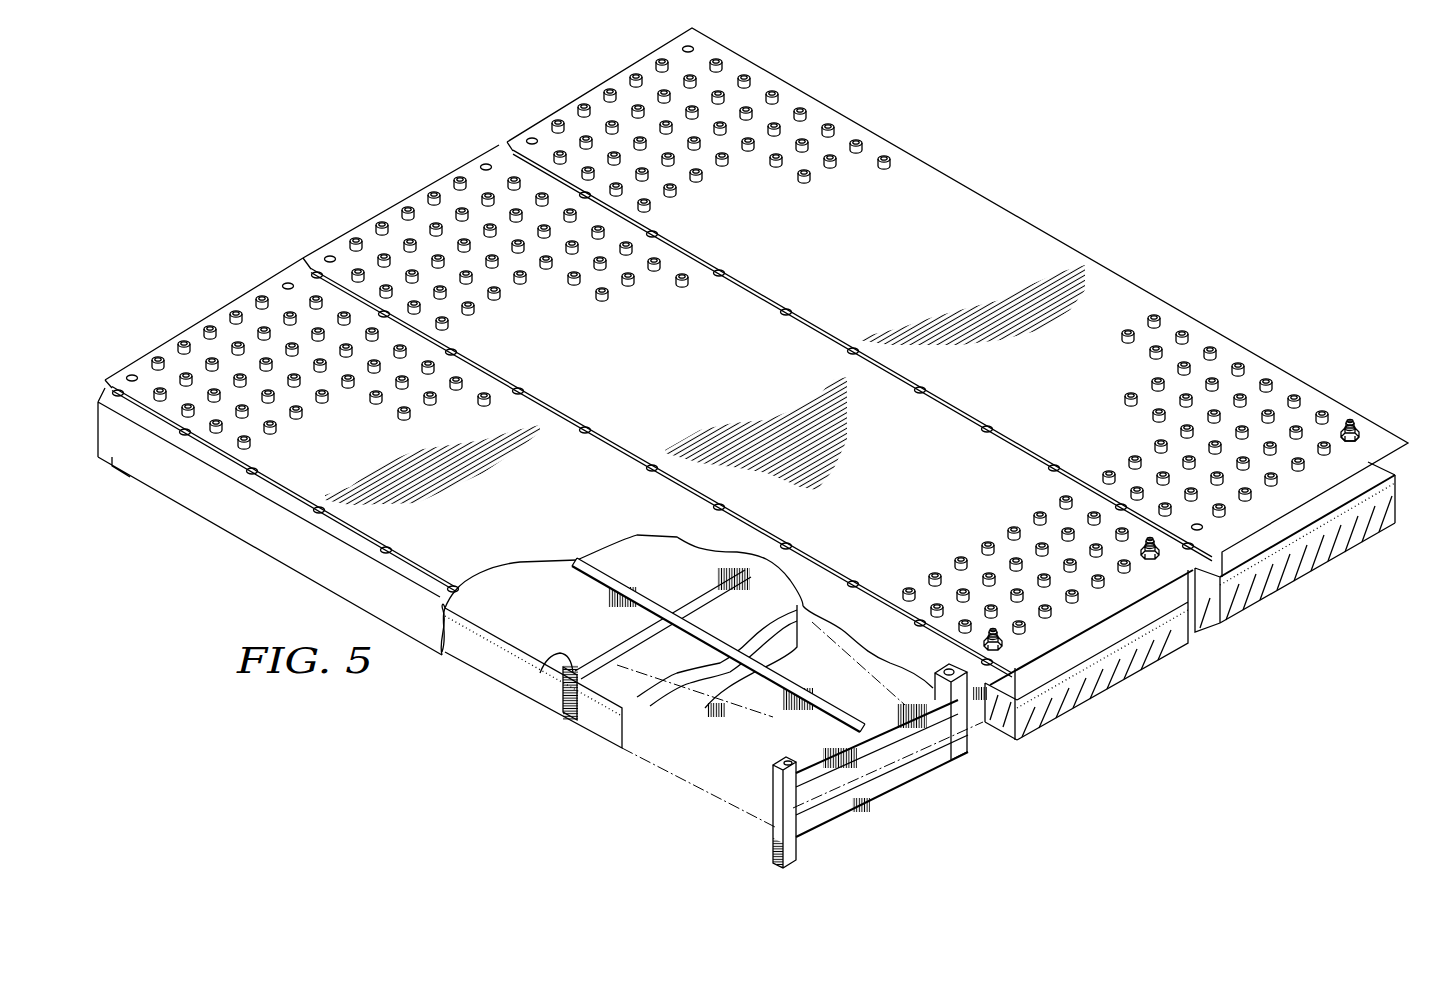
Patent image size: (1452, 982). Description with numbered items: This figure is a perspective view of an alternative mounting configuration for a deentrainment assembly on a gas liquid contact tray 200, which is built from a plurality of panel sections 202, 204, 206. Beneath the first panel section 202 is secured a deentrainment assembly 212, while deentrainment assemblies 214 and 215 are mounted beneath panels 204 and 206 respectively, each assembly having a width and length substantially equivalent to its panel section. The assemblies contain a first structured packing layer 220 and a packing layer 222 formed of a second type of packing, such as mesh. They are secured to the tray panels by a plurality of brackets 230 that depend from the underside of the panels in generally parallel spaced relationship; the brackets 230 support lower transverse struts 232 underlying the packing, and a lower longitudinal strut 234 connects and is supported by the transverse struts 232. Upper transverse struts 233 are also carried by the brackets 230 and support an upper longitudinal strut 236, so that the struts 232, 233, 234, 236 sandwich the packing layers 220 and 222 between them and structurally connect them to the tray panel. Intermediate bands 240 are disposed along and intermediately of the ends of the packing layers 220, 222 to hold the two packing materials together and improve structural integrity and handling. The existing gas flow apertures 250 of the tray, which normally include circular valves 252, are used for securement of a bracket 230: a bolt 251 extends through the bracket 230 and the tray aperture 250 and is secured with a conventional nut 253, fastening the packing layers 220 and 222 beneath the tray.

The gas liquid contact tray 200 is at (314, 130).
The first panel section 202 is at (524, 500).
The panel section 204 is at (716, 394).
The panel section 206 is at (920, 274).
The deentrainment assembly 212 is at (647, 727).
The deentrainment assembly 214 is at (1100, 678).
The deentrainment assembly 215 is at (1325, 552).
The first structured packing layer 220 is at (1053, 712).
The packing layer 222 is at (1066, 683).
The bracket 230 is at (773, 822).
The lower transverse strut 232 is at (845, 784).
The upper transverse strut 233 is at (867, 744).
The lower longitudinal strut 234 is at (850, 826).
The longitudinal strut 236 is at (822, 715).
The intermediate band 240 is at (555, 657).
The gas flow aperture 250 is at (1204, 528).
The bolt 251 is at (1352, 420).
The circular valve 252 is at (1112, 379).
The nut 253 is at (1362, 436).